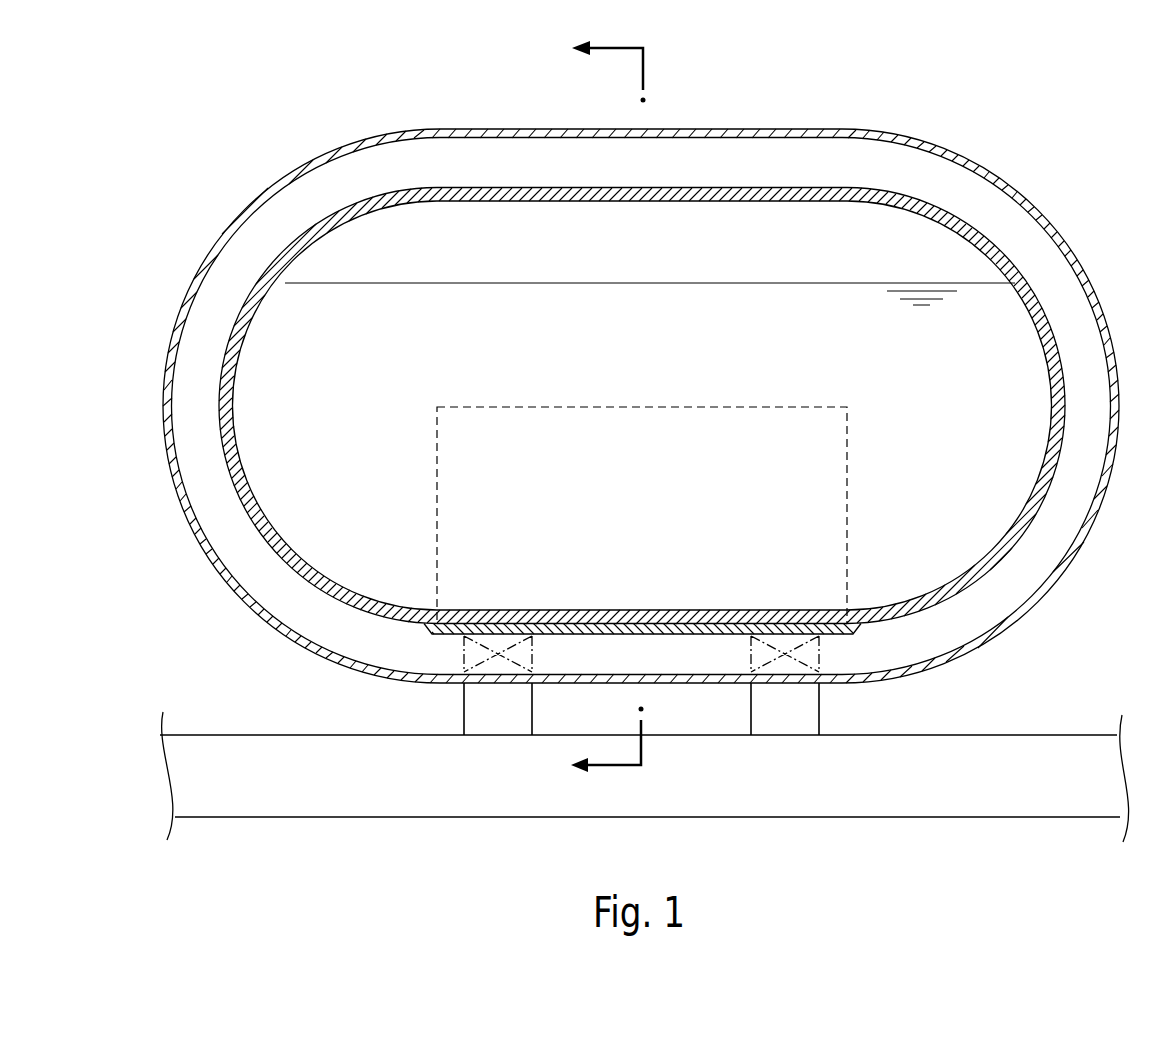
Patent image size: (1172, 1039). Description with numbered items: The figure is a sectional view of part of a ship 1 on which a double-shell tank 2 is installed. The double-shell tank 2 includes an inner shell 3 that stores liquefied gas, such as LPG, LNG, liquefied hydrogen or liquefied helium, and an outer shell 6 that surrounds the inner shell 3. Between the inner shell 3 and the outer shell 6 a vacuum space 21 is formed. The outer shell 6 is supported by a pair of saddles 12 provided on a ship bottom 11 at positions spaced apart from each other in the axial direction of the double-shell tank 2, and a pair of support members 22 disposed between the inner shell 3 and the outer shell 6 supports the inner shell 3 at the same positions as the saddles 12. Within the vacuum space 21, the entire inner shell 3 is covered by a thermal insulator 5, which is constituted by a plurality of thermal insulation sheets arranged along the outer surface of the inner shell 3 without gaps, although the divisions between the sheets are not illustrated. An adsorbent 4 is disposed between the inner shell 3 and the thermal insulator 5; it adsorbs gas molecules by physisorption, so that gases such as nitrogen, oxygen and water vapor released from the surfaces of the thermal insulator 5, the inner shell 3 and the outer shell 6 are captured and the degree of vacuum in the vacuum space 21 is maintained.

The ship 1 is at (1068, 683).
The double-shell tank 2 is at (298, 167).
The inner shell 3 is at (742, 200).
The adsorbent 4 is at (624, 612).
The thermal insulator 5 is at (795, 188).
The outer shell 6 is at (713, 128).
The vacuum space 21 is at (474, 166).
The support member 22 is at (472, 650).
The ship bottom 11 is at (267, 793).
The saddle 12 is at (503, 712).